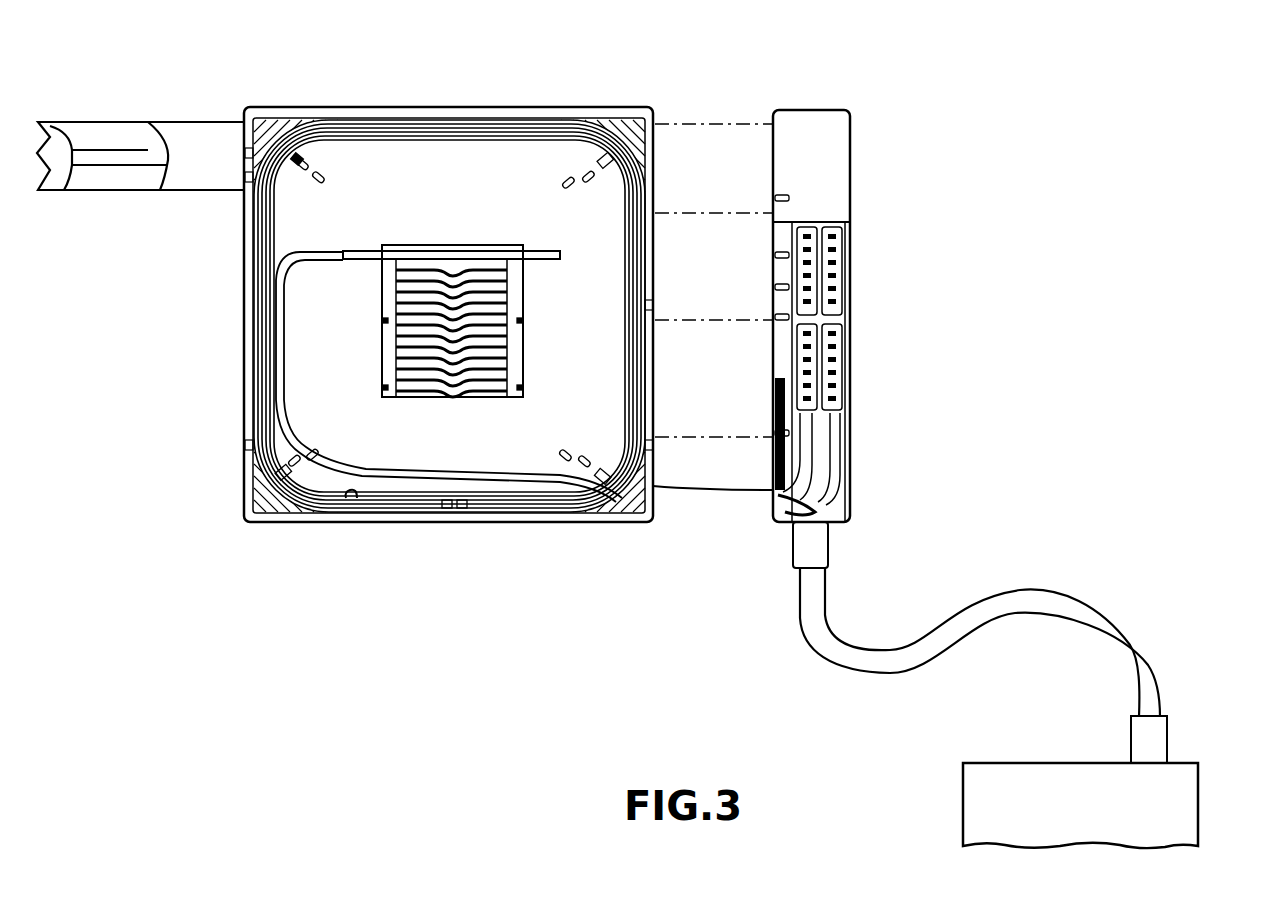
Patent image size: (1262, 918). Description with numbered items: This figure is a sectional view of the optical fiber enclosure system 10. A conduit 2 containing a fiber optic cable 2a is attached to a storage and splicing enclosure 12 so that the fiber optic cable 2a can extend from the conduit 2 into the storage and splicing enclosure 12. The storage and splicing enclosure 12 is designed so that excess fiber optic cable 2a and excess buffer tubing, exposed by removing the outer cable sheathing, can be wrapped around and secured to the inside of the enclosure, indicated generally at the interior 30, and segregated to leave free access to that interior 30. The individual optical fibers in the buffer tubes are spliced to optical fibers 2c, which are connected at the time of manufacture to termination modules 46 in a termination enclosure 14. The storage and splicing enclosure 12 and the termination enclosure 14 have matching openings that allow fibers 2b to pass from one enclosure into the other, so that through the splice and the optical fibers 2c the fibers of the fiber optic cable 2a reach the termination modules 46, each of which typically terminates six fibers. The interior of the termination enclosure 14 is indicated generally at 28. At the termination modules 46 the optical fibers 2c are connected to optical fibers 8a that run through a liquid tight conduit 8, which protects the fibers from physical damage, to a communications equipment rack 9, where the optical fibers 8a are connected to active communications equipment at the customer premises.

The optical fiber enclosure system 10 is at (686, 54).
The storage and splicing enclosure 12 is at (478, 111).
The termination enclosure 14 is at (842, 114).
The conduit 2 is at (188, 124).
The fiber optic cable 2a is at (131, 150).
The fibers 2b is at (357, 498).
The optical fiber 2c is at (715, 500).
The interior of termination enclosure 28 is at (852, 250).
The termination module 46 is at (850, 292).
The interior of storage and splicing enclosure 30 is at (517, 456).
The optical fibers 8a is at (845, 504).
The liquid tight conduit 8 is at (1050, 592).
The communications equipment rack 9 is at (1195, 763).